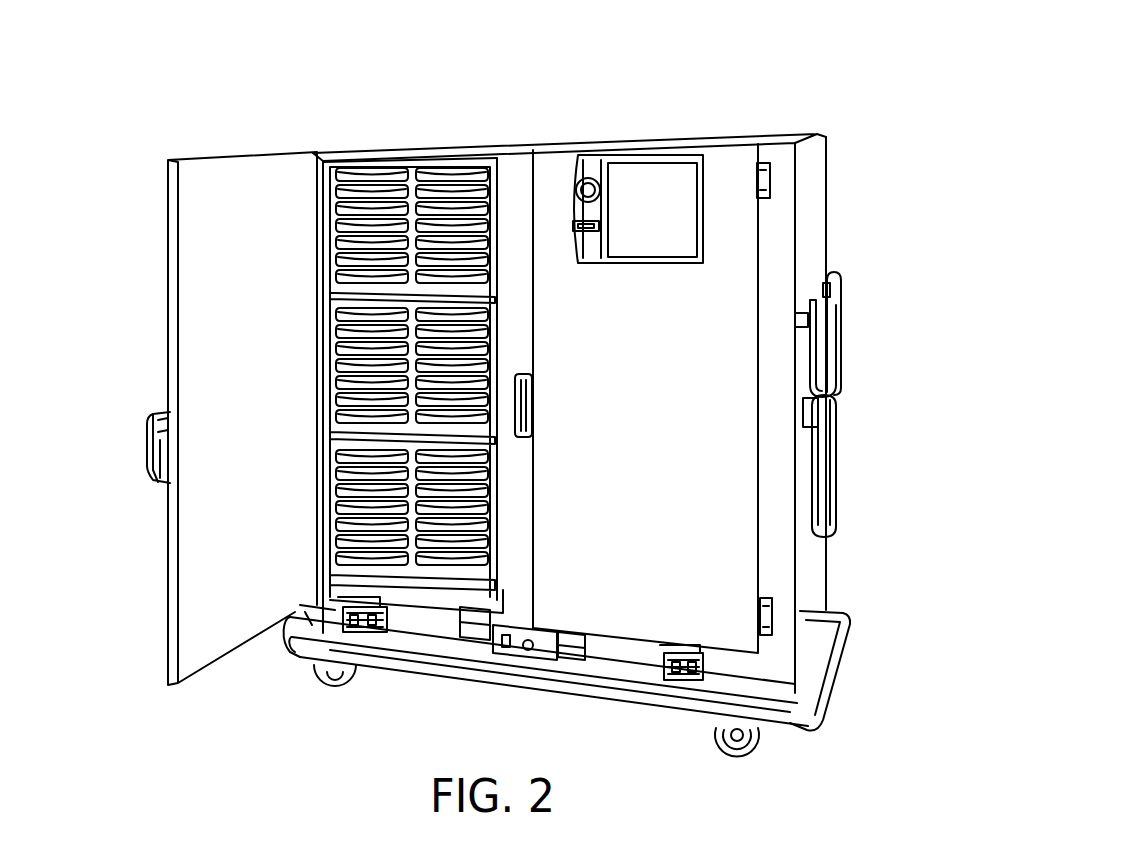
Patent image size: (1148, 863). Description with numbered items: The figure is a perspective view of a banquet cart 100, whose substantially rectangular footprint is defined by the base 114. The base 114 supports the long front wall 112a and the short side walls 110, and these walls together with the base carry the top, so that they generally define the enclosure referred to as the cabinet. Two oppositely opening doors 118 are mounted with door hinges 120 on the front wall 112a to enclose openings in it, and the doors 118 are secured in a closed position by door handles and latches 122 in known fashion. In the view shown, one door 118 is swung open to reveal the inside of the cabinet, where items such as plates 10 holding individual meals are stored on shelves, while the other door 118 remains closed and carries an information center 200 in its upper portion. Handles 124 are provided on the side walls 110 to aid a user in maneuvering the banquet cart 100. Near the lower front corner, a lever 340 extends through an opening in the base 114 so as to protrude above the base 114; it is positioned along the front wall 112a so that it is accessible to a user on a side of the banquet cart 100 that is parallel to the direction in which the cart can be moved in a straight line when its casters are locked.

The banquet cart 100 is at (668, 105).
The plates 10 is at (337, 171).
The side walls 110 is at (810, 237).
The front wall 112a is at (757, 688).
The base 114 is at (670, 713).
The doors 118 is at (175, 575).
The door hinges 120 is at (767, 181).
The door handles and latches 122 is at (530, 417).
The handles 124 is at (842, 330).
The information center 200 is at (643, 267).
The lever 340 is at (316, 613).